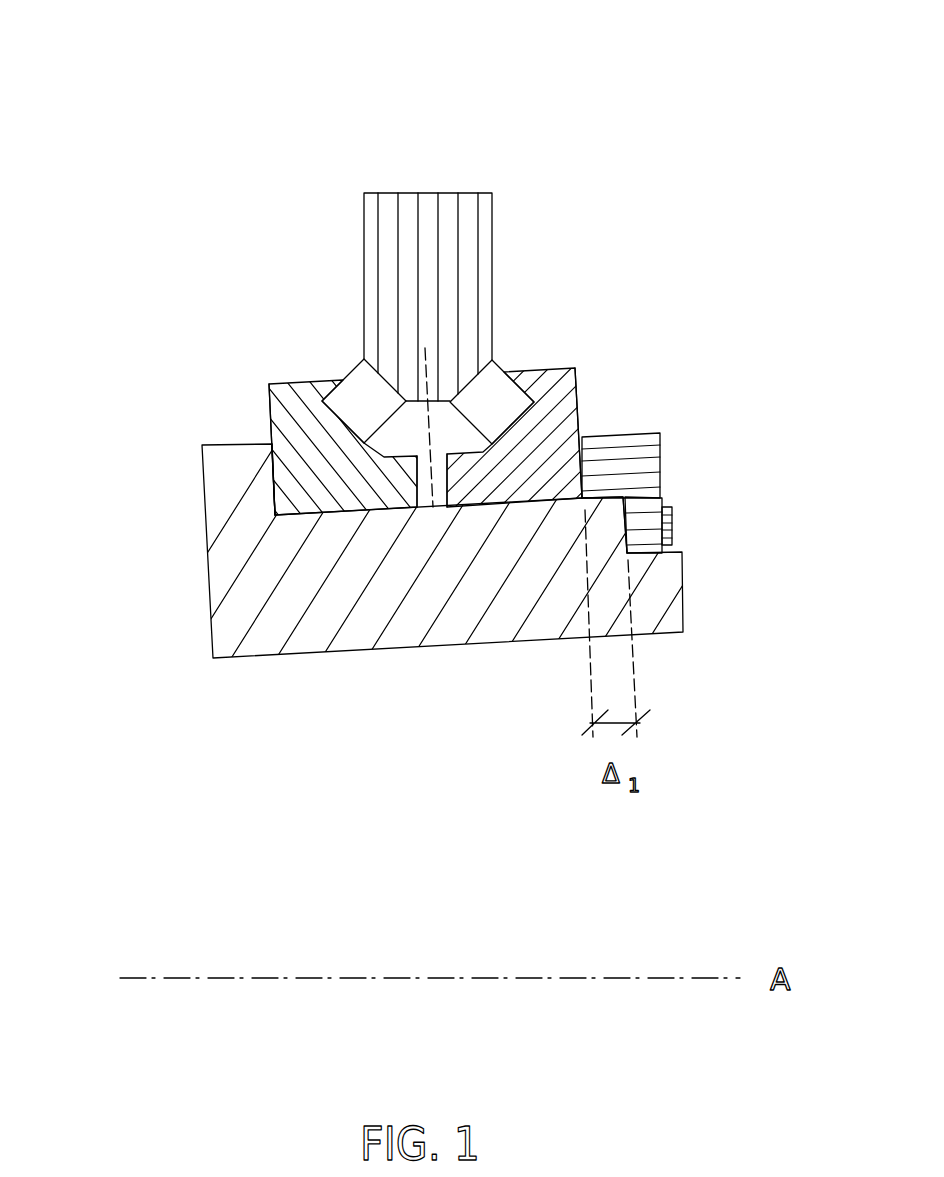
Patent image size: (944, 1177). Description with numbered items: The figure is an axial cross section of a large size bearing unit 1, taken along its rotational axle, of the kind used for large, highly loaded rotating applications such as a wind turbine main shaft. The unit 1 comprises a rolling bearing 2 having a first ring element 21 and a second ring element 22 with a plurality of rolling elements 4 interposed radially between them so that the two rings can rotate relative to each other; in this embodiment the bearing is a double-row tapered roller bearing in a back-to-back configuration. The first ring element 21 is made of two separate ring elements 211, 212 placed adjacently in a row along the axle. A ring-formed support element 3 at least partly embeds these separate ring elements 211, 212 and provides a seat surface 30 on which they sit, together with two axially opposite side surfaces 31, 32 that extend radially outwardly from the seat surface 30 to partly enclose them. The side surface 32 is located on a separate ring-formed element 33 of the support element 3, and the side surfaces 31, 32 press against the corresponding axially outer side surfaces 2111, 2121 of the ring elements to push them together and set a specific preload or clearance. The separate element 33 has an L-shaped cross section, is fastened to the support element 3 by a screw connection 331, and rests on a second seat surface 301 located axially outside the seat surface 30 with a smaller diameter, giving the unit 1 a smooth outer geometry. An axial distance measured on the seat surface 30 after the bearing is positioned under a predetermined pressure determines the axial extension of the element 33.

The large size bearing unit 1 is at (457, 374).
The rolling bearing 2 is at (367, 245).
The second ring element 22 is at (410, 232).
The rolling elements 4 is at (350, 373).
The first ring element 21 is at (428, 412).
The separate ring element 212 is at (428, 424).
The separate ring element 211 is at (291, 414).
The axially outer side surface 2111 is at (272, 473).
The side surface 32 is at (692, 427).
The axially outer side surface 2121 is at (593, 460).
The seat surface 30 is at (443, 510).
The ring-formed support element 3 is at (501, 578).
The side surface 31 is at (273, 479).
The second seat surface 301 is at (659, 433).
The separate ring-formed element 33 is at (715, 509).
The screw connection 331 is at (673, 523).